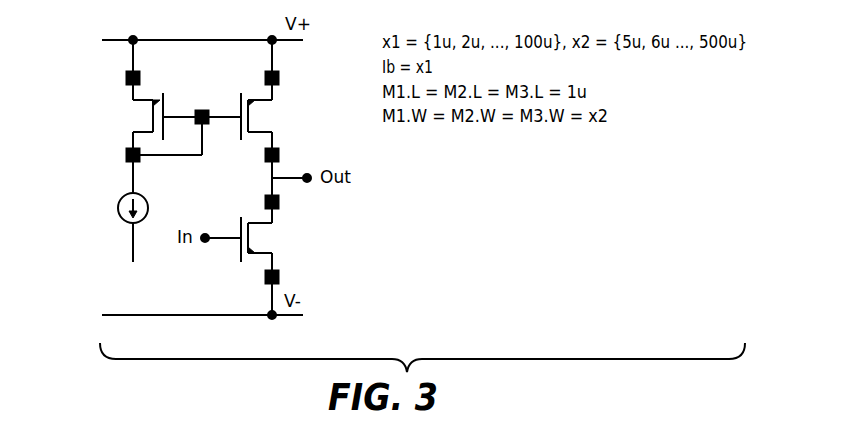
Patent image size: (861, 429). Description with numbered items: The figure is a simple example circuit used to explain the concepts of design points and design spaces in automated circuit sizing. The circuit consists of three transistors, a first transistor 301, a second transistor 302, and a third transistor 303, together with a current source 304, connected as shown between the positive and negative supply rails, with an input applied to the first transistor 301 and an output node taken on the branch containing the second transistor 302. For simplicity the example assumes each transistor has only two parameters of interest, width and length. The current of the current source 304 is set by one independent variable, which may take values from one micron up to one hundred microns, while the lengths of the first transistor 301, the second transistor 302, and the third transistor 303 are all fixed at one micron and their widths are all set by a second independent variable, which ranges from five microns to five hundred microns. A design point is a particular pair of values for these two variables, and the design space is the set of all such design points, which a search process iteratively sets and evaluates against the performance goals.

The transistor M1 301 is at (298, 240).
The transistor M2 302 is at (298, 117).
The transistor M3 303 is at (92, 122).
The current source Ib 304 is at (122, 222).